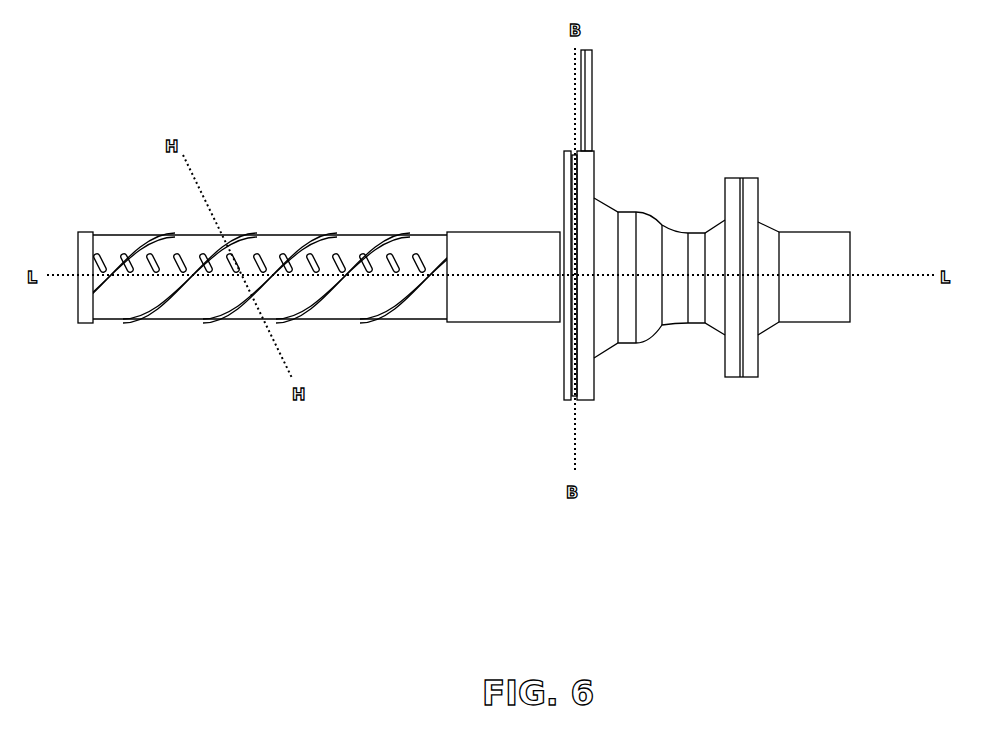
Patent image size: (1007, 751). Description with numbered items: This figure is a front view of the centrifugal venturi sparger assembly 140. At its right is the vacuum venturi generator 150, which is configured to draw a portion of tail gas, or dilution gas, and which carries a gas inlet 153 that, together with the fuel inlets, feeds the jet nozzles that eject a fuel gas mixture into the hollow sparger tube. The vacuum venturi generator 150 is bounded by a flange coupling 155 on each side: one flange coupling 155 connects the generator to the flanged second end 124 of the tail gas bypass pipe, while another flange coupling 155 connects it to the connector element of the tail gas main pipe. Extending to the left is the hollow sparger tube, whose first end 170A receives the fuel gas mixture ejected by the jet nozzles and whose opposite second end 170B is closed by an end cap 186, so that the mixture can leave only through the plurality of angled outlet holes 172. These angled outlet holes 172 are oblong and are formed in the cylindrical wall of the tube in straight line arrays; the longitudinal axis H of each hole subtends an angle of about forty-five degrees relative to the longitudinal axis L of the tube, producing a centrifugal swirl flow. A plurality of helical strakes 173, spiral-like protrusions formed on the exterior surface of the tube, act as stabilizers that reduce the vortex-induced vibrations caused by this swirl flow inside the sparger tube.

The centrifugal venturi sparger assembly 140 is at (376, 176).
The end cap 186 is at (80, 282).
The second end 170B is at (106, 236).
The angled outlet holes 172 is at (412, 258).
The helical strakes 173 is at (322, 307).
The first end 170A is at (560, 232).
The gas inlet 153 is at (588, 95).
The vacuum venturi generator 150 is at (662, 222).
The second end 124 is at (755, 194).
The flange coupling 155 is at (568, 362).